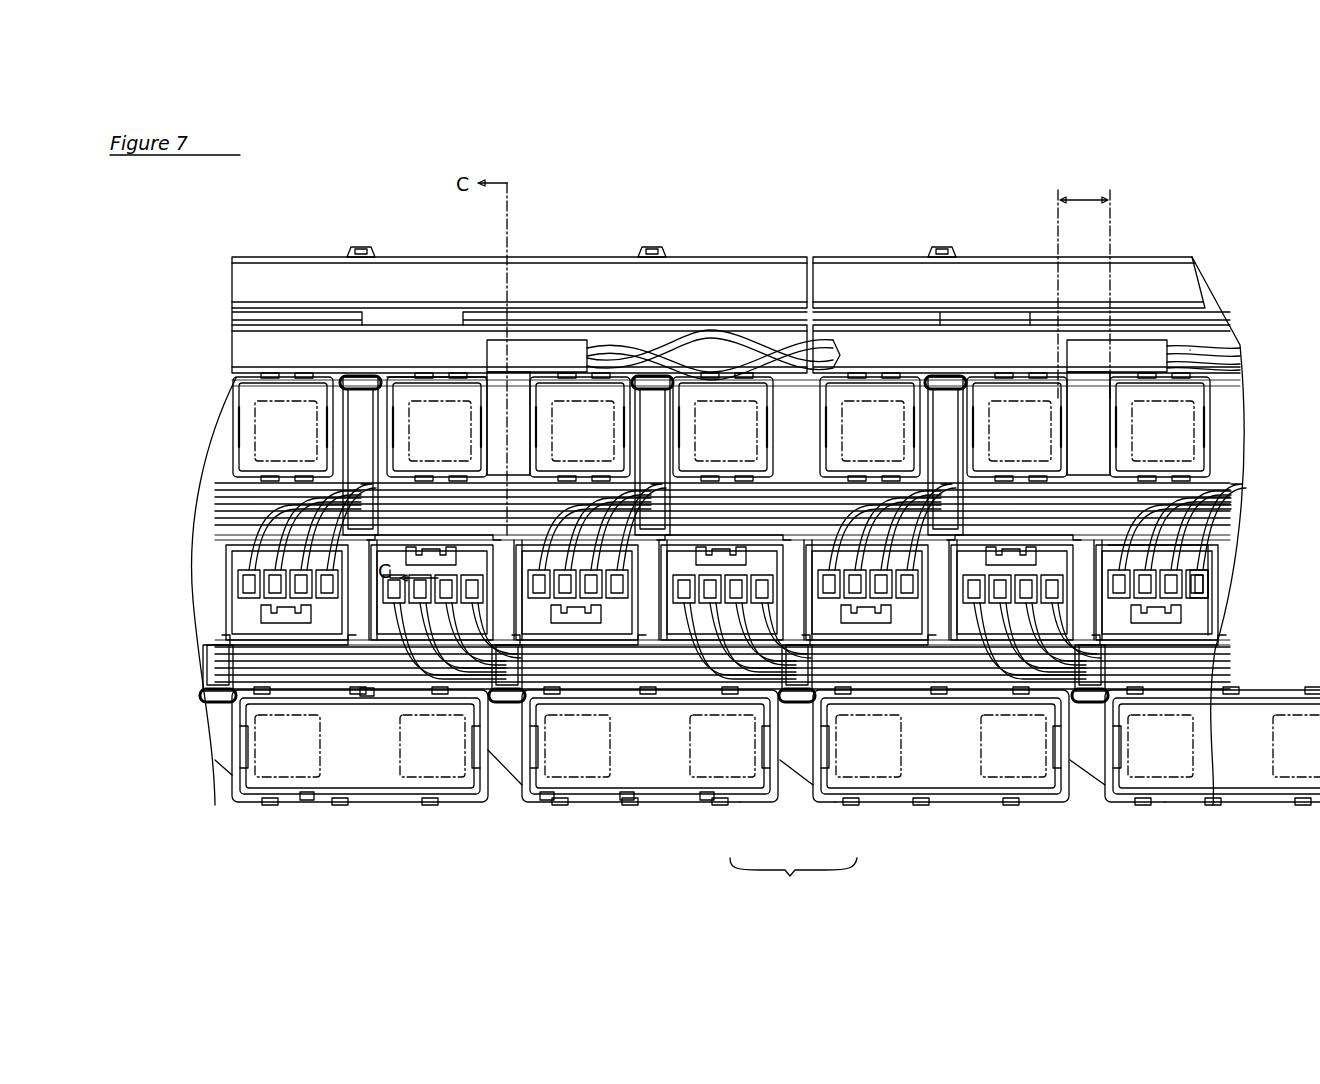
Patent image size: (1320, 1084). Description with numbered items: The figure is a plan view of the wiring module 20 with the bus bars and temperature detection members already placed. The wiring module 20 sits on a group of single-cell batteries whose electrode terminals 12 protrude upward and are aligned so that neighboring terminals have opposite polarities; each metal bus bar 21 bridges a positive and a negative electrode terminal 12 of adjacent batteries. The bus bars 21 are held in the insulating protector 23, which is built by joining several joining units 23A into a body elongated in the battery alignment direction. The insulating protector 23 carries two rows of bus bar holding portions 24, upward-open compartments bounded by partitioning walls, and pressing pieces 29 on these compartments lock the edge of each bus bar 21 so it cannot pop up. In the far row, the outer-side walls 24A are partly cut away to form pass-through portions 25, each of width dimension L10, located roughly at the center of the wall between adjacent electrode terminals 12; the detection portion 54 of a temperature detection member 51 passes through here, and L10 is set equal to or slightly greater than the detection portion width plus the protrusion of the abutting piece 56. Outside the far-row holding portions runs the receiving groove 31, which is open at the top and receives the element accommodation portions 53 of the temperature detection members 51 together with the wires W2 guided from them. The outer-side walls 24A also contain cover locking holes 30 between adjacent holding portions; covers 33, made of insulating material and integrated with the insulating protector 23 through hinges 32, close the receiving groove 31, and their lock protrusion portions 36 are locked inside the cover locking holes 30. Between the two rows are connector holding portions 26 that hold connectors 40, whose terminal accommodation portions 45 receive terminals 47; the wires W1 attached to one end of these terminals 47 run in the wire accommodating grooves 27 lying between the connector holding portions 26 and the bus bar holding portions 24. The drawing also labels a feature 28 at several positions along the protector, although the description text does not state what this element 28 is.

The electrode terminal 12 is at (1163, 802).
The wiring module 20 is at (1184, 227).
The bus bar 21 is at (372, 770).
The insulating protector 23 is at (793, 878).
The joining unit 23A is at (740, 802).
The bus bar holding portion 24 is at (262, 392).
The outer-side wall 24A is at (405, 377).
The pass-through portion 25 is at (487, 352).
The connector holding portion 26 is at (240, 573).
The wire accommodating groove 27 is at (262, 500).
The coupling portion 28 is at (360, 492).
The pressing piece 29 is at (368, 705).
The cover locking hole 30 is at (648, 377).
The receiving groove 31 is at (987, 330).
The hinge 32 is at (1140, 330).
The cover 33 is at (735, 285).
The lock protrusion portion 36 is at (652, 247).
The connector 40 is at (1208, 562).
The terminal accommodation portion 45 is at (1204, 590).
The terminal 47 is at (1208, 578).
The temperature detection member 51 is at (540, 343).
The element accommodation portion 53 is at (1150, 350).
The detection portion 54 is at (1100, 440).
The abutting piece 56 is at (1062, 375).
The width dimension of the pass-through portion L10 is at (1084, 286).
The wire W1 is at (1195, 666).
The wire W2 is at (1210, 358).